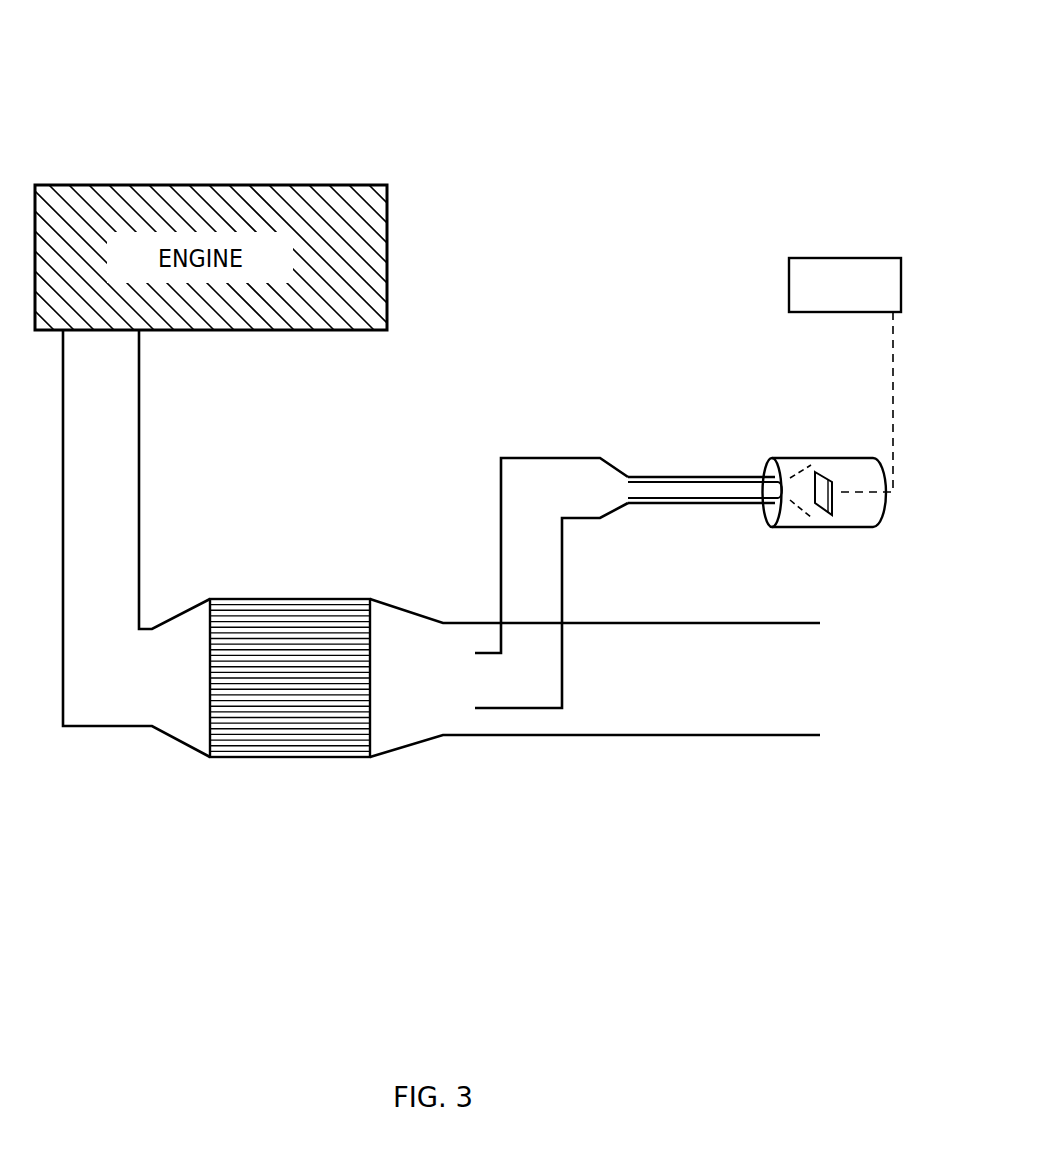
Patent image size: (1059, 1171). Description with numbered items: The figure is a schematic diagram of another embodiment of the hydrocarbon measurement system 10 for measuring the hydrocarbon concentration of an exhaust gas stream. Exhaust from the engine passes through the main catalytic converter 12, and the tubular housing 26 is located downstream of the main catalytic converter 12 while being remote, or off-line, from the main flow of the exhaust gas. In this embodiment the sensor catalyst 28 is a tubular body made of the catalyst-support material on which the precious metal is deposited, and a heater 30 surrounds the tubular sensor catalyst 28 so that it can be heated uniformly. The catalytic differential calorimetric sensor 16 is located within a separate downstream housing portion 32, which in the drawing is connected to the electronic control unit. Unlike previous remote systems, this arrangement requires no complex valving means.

The hydrocarbon measurement system 10 is at (889, 240).
The main catalytic converter 12 is at (340, 618).
The catalytic differential calorimetric sensor 16 is at (826, 472).
The tubular housing 26 is at (501, 518).
The sensor catalyst 28 is at (660, 498).
The heater 30 is at (738, 503).
The downstream housing portion 32 is at (790, 457).